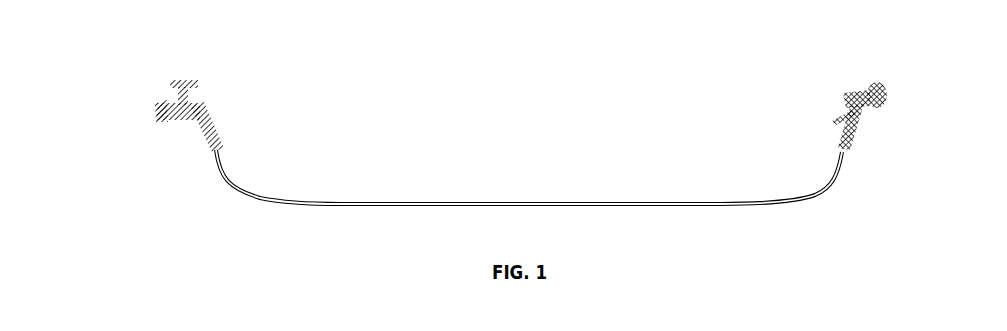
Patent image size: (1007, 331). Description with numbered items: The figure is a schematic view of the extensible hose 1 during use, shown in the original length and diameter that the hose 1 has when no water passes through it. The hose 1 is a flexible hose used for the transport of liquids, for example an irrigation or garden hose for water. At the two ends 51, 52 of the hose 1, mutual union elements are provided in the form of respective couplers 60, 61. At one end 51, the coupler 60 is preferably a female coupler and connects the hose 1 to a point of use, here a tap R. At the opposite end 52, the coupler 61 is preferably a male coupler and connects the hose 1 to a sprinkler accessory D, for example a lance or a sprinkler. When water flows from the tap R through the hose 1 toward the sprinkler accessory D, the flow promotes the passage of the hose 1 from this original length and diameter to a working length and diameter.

The extensible hose 1 is at (538, 203).
The tap R is at (193, 111).
The end of hose 51 is at (231, 152).
The coupler 60 is at (205, 138).
The sprinkler accessory D is at (884, 96).
The coupler 61 is at (841, 148).
The end of hose 52 is at (853, 159).